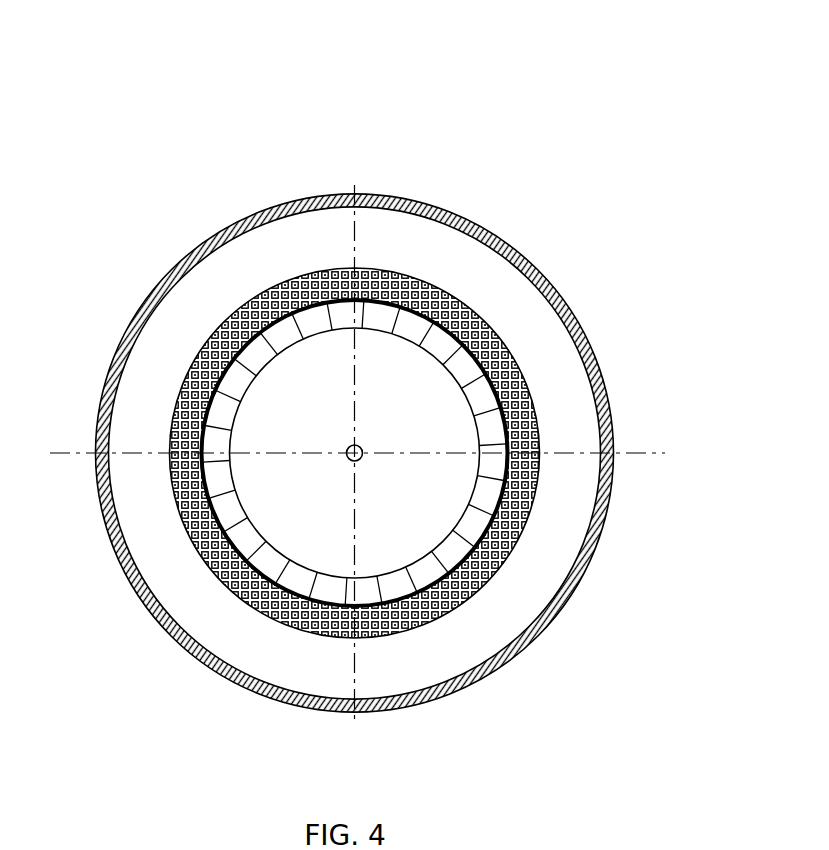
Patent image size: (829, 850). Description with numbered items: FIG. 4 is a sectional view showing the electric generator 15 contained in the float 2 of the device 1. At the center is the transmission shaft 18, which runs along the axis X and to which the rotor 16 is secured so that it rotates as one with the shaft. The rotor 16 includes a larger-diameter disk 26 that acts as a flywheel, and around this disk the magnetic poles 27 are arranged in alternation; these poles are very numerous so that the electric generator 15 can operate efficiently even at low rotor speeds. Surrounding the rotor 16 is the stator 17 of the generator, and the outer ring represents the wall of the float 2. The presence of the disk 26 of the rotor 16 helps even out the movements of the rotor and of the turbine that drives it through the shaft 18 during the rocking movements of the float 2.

The electric motor 1 is at (456, 172).
The float 2 is at (548, 253).
The electric generator 15 is at (498, 594).
The rotor 16 is at (255, 423).
The stator 17 is at (197, 548).
The transmission shaft 18 is at (347, 452).
The disk 26 is at (258, 300).
The magnetic poles 27 is at (428, 345).